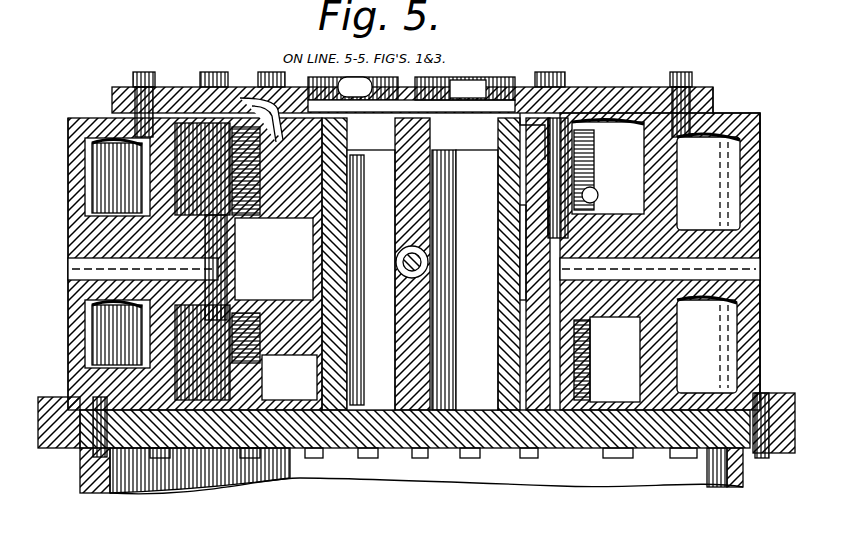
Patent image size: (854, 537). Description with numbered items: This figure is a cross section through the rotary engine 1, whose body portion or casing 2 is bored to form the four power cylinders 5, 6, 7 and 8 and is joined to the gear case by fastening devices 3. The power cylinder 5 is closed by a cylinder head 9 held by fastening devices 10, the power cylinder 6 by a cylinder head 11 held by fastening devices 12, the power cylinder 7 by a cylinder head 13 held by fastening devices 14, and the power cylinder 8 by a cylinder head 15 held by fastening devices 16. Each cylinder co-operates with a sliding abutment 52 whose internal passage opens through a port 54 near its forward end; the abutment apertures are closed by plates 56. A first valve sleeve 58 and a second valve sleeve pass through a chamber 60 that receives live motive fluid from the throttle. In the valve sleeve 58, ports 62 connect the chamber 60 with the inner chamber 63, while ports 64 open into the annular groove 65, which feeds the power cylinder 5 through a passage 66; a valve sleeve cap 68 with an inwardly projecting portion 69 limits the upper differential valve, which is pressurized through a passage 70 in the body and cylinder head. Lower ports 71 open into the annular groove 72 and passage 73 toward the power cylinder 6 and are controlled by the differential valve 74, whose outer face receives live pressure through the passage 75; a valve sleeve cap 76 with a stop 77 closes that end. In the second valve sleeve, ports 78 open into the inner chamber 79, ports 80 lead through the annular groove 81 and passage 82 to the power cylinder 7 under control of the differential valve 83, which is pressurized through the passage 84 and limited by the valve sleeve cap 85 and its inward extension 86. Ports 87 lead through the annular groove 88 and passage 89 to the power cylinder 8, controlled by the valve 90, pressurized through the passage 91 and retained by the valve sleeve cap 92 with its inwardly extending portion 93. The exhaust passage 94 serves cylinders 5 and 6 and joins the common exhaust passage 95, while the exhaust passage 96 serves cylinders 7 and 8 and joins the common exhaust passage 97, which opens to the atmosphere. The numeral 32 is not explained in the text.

The rotary engine 1 is at (82, 492).
The body portion or casing 2 is at (758, 332).
The fastening devices 3 is at (757, 455).
The power cylinder 5 is at (145, 152).
The power cylinder 6 is at (150, 338).
The power cylinder 7 is at (668, 184).
The power cylinder 8 is at (666, 352).
The cylinder head 9 is at (112, 98).
The fastening devices 10 is at (133, 78).
The cylinder head 11 is at (187, 480).
The fastening devices 12 is at (110, 487).
The cylinder head 13 is at (713, 92).
The fastening devices 14 is at (692, 76).
The cylinder head 15 is at (650, 450).
The fastening devices 16 is at (674, 457).
The piston 32 is at (160, 335).
The sliding abutment 52 is at (640, 62).
The port 54 is at (371, 280).
The plates 56 is at (342, 264).
The valve sleeve 58 is at (295, 265).
The chamber 60 is at (300, 295).
The ports 62 is at (393, 256).
The chamber 63 is at (392, 290).
The ports 64 is at (412, 264).
The annular groove 65 is at (302, 226).
The passage 66 is at (250, 165).
The valve sleeve cap 68 is at (264, 86).
The inwardly projecting portion 69 is at (392, 103).
The passage 70 is at (246, 92).
The ports 71 is at (392, 330).
The annular groove 72 is at (246, 378).
The passage 73 is at (505, 290).
The differential valve 74 is at (325, 395).
The passage 75 is at (267, 447).
The valve sleeve cap 76 is at (318, 437).
The stop 77 is at (322, 450).
The ports 78 is at (500, 263).
The chamber 79 is at (500, 246).
The ports 80 is at (500, 202).
The annular groove 81 is at (524, 264).
The passage 82 is at (608, 166).
The differential valve 83 is at (540, 112).
The passage 84 is at (565, 110).
The valve sleeve cap 85 is at (465, 88).
The inward extension 86 is at (528, 100).
The ports 87 is at (586, 280).
The annular groove 88 is at (520, 412).
The passage 89 is at (594, 366).
The valve 90 is at (525, 268).
The passage 91 is at (527, 440).
The valve sleeve cap 92 is at (458, 437).
The inwardly extending portion 93 is at (428, 420).
The exhaust passage 94 is at (210, 230).
The common exhaust passage 95 is at (74, 268).
The exhaust passage 96 is at (596, 210).
The common exhaust passage 97 is at (760, 268).